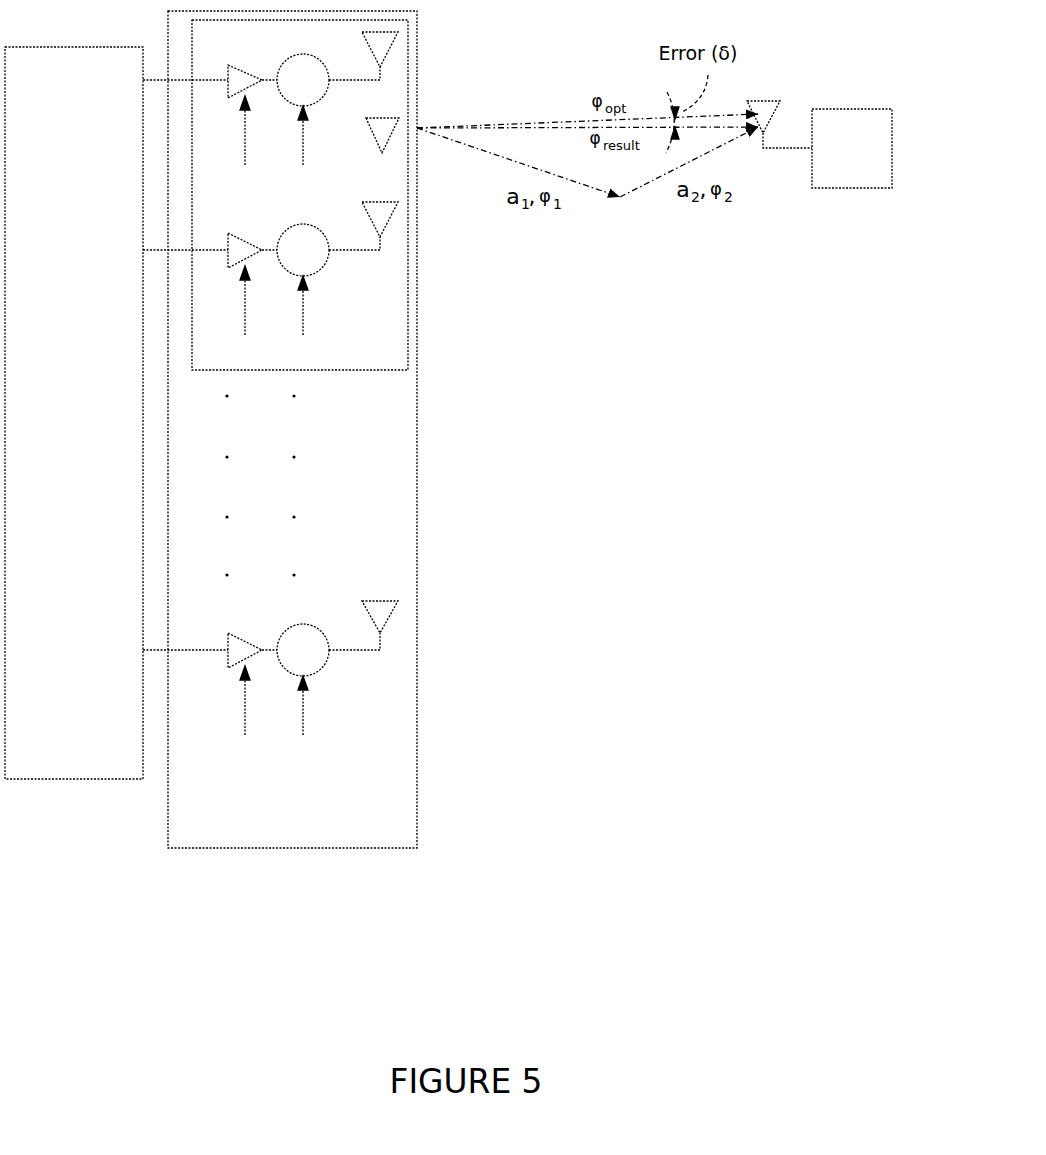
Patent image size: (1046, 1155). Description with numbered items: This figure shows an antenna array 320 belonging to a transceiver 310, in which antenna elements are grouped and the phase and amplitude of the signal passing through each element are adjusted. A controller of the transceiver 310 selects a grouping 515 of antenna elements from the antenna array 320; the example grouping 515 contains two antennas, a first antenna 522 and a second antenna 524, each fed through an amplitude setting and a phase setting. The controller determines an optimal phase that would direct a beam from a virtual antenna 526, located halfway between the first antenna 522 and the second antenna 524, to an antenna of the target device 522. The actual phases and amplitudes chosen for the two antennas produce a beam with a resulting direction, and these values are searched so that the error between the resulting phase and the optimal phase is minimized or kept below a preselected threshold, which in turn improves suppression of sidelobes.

The transceiver 310 is at (56, 451).
The antenna array 320 is at (404, 841).
The grouping of antenna elements 515 is at (357, 322).
The target device 522 is at (392, 50).
The second antenna element (Ant2) 524 is at (392, 228).
The virtual antenna 526 is at (393, 138).